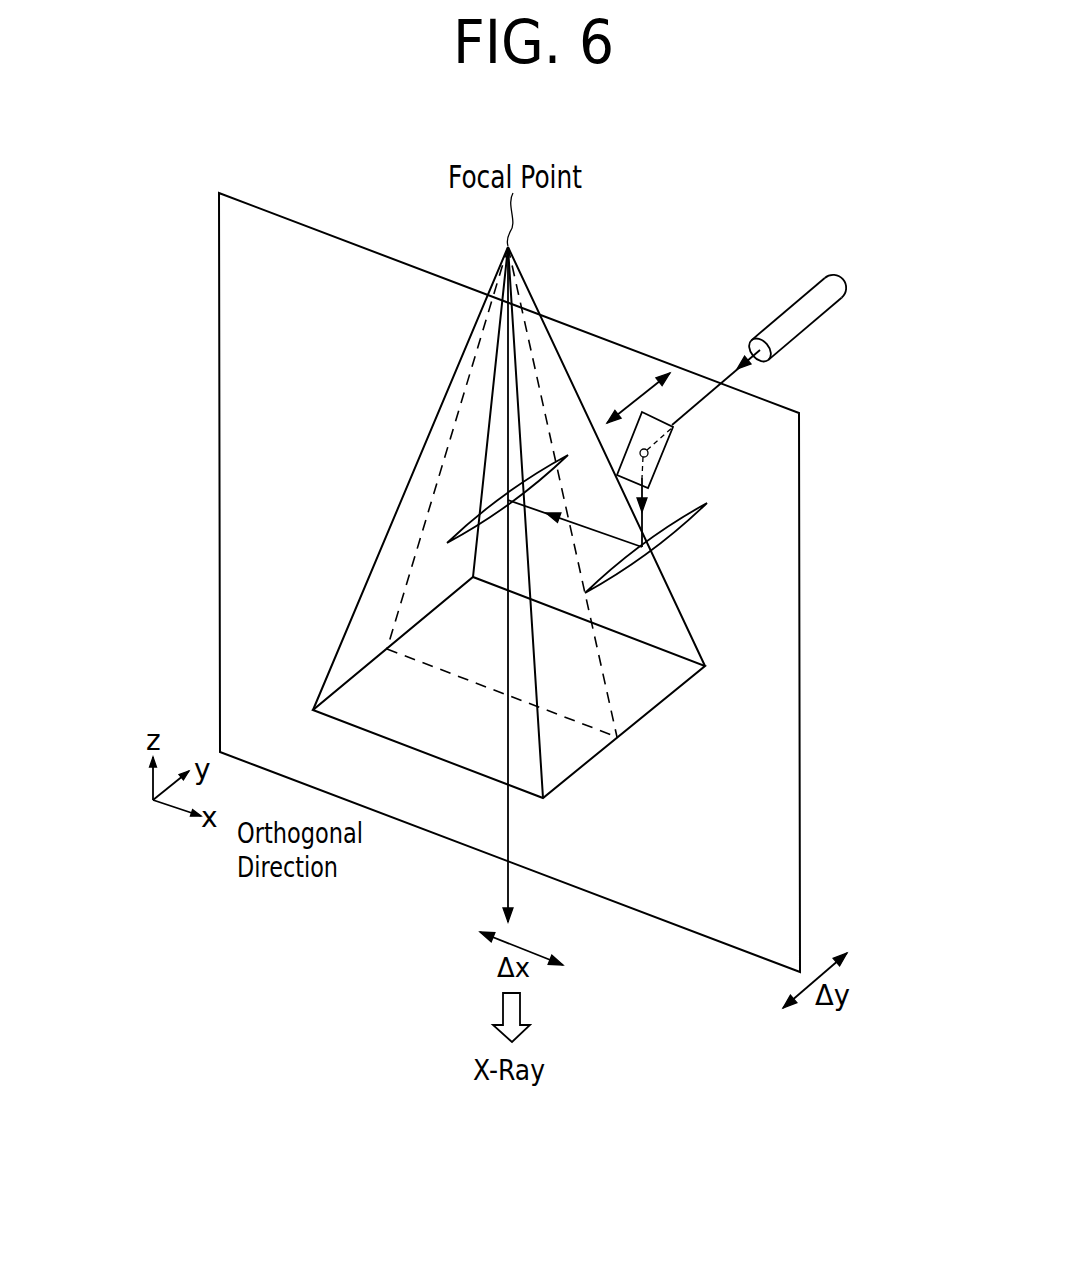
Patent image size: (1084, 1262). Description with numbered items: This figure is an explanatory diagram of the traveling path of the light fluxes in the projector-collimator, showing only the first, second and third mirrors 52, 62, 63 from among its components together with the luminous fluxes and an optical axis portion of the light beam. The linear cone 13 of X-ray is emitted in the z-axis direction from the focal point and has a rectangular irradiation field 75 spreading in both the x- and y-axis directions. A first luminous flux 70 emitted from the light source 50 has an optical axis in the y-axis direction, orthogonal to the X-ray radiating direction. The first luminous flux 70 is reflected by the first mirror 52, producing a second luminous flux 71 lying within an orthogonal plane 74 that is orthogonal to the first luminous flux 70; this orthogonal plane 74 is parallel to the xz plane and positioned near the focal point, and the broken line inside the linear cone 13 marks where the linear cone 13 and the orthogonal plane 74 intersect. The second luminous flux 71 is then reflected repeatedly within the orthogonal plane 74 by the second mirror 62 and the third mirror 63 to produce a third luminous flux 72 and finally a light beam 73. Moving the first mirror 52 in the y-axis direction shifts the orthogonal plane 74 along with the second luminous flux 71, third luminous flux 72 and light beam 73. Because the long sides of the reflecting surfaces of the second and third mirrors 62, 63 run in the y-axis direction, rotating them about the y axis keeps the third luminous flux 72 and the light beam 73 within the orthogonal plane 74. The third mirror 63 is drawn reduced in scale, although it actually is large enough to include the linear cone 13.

The linear cone 13 is at (550, 332).
The light source 50 is at (800, 323).
The first mirror 52 is at (663, 457).
The second mirror 62 is at (665, 531).
The third mirror 63 is at (540, 462).
The first luminous flux 70 is at (727, 376).
The second luminous flux 71 is at (658, 500).
The third luminous flux 72 is at (597, 528).
The light beam 73 is at (508, 828).
The orthogonal plane 74 is at (802, 737).
The rectangular irradiation field 75 is at (667, 670).